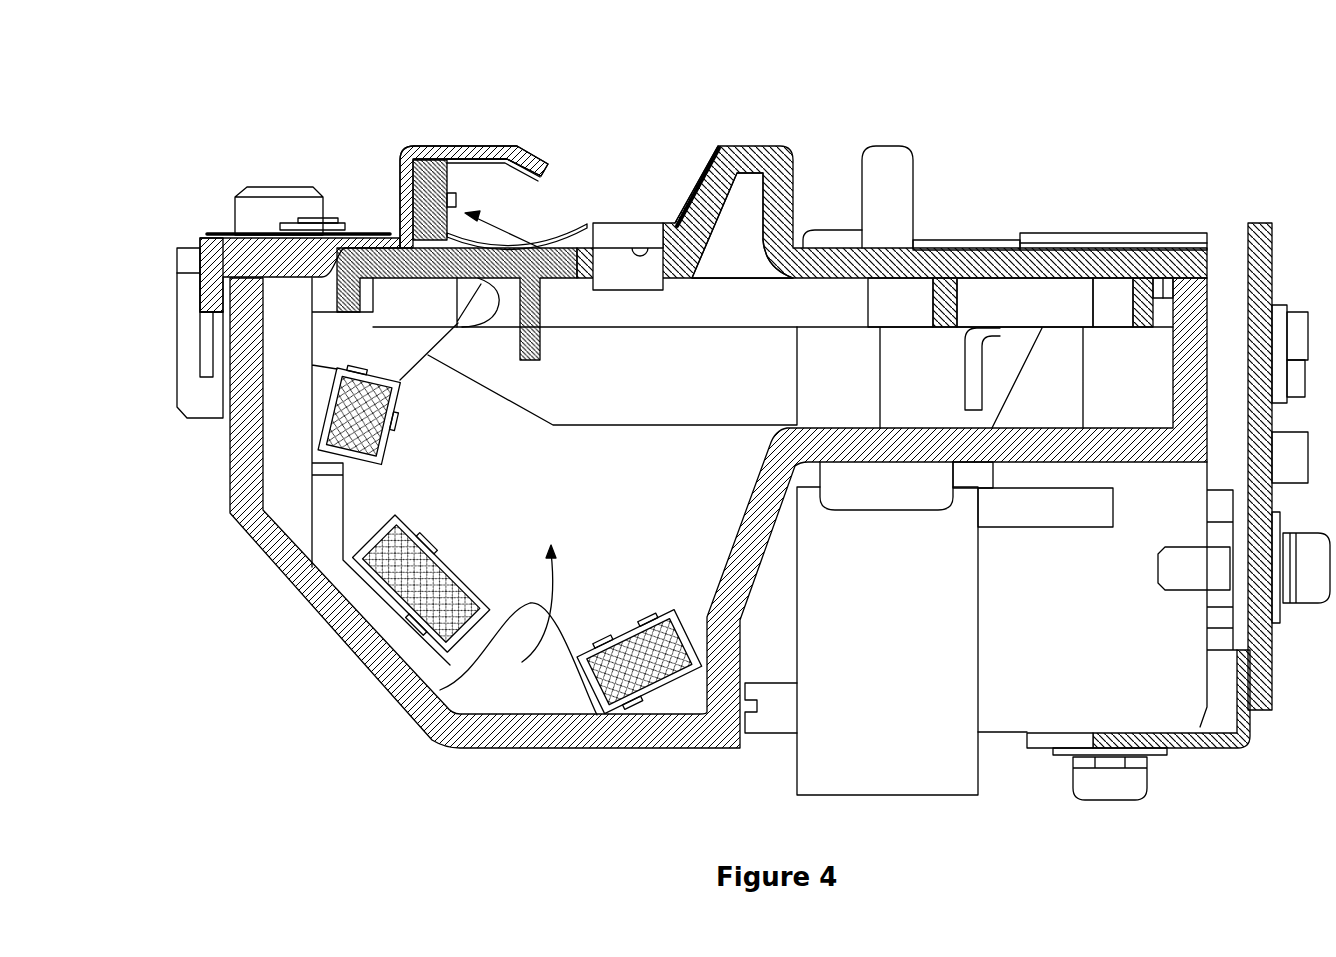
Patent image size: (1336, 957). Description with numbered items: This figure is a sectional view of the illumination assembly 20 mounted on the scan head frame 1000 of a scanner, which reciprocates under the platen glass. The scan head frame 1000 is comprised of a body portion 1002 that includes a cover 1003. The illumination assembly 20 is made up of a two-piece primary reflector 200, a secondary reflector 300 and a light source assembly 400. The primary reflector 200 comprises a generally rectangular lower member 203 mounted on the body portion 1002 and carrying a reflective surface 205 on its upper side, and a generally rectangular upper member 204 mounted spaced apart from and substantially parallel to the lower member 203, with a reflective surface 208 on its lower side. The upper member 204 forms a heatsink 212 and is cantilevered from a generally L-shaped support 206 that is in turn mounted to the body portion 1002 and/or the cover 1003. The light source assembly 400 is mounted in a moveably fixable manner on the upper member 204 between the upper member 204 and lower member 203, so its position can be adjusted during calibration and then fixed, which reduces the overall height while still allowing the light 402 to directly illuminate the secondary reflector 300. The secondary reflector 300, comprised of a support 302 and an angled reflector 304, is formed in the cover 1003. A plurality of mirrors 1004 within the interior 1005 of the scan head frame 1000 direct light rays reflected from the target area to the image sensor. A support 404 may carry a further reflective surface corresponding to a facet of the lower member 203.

The illumination assembly 20 is at (606, 82).
The primary reflector 200 is at (460, 95).
The lower member 203 is at (592, 230).
The upper member 204 is at (475, 148).
The reflective surface 205 is at (534, 245).
The support 206 is at (400, 205).
The reflective surface 208 is at (487, 166).
The heatsink 212 is at (440, 147).
The secondary reflector 300 is at (767, 117).
The support 302 is at (713, 225).
The angled reflector 304 is at (698, 200).
The light source assembly 400 is at (530, 253).
The light 402 is at (413, 157).
The support 404 is at (447, 231).
The scan head frame 1000 is at (1072, 126).
The body portion 1002 is at (230, 460).
The cover 1003 is at (938, 250).
The mirrors 1004 is at (478, 290).
The interior 1005 is at (440, 690).